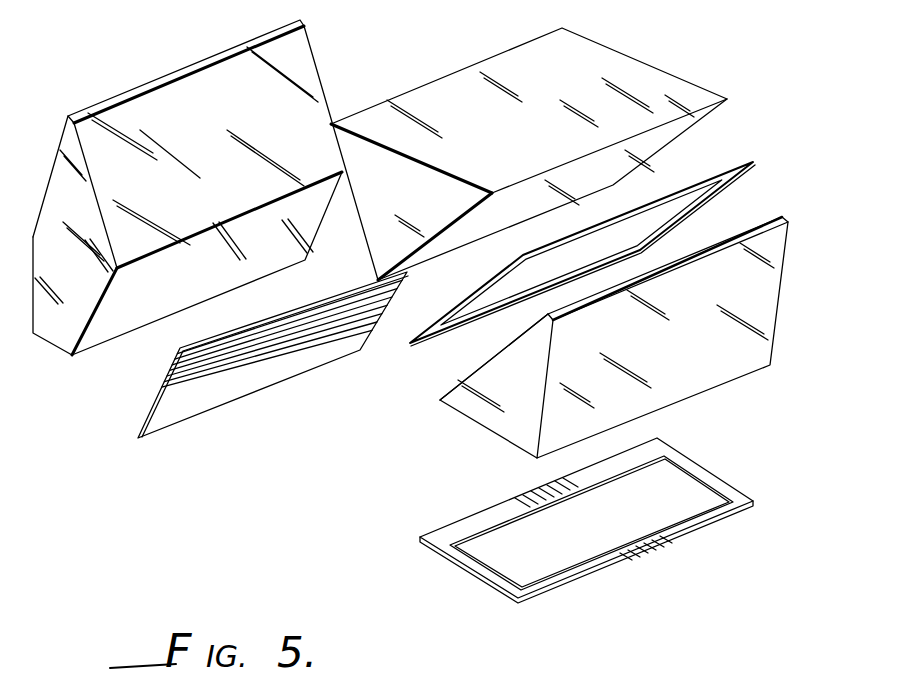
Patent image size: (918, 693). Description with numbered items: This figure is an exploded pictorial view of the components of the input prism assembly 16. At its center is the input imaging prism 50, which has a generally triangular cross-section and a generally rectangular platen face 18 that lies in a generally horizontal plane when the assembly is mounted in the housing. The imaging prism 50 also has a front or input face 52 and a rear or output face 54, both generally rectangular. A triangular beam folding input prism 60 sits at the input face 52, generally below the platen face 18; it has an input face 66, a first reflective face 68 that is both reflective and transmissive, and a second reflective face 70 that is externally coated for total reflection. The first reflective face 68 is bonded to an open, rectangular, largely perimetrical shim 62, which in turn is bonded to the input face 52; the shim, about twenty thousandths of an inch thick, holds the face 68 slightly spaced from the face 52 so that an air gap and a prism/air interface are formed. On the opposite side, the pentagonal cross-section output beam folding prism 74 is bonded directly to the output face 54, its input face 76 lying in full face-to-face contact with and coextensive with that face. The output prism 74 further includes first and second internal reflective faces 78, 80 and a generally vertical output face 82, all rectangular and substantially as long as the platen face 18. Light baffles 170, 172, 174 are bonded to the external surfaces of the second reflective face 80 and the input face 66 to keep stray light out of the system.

The input prism assembly 16 is at (846, 9).
The platen face 18 is at (532, 123).
The input imaging prism 50 is at (529, 152).
The input face 52 is at (433, 244).
The output face 54 is at (348, 214).
The beam folding input prism 60 is at (632, 339).
The shim 62 is at (737, 180).
The input face 66 is at (488, 438).
The first reflective face 68 is at (480, 367).
The second reflective face 70 is at (724, 370).
The output beam folding prism 74 is at (202, 203).
The input face 76 is at (312, 75).
The first internal reflective face 78 is at (66, 140).
The second internal reflective face 80 is at (120, 325).
The output face 82 is at (31, 333).
The light baffle 170 is at (181, 413).
The light baffle 172 is at (586, 520).
The light baffle 174 is at (623, 555).